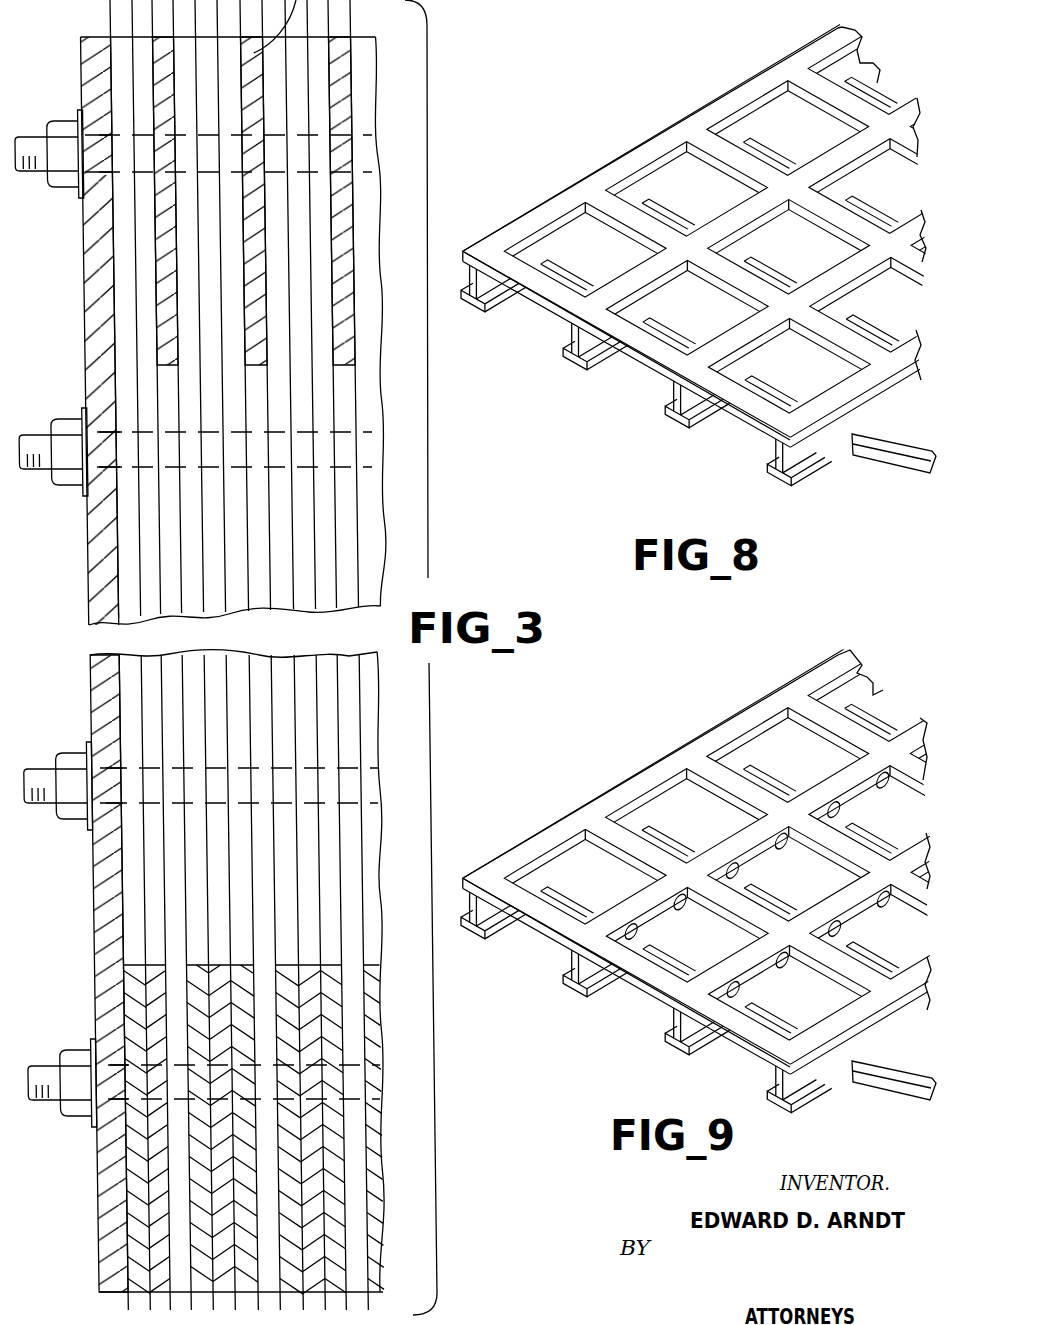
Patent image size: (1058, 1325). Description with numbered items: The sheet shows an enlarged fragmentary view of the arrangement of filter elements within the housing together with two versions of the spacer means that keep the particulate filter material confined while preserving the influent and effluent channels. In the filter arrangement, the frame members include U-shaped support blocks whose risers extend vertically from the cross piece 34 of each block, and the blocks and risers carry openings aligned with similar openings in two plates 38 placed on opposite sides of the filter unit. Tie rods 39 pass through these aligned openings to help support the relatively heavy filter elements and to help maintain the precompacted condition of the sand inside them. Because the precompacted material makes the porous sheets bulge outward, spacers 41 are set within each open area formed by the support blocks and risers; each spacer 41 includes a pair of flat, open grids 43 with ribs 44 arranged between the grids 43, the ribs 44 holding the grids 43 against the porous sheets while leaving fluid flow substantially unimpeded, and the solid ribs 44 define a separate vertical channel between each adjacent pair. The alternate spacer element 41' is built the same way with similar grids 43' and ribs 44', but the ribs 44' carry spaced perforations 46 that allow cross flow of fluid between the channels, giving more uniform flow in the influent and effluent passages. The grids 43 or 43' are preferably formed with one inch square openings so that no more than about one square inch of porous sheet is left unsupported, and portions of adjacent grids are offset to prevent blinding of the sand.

In FIG. 3, the cross piece 34 is at (344, 65).
In FIG. 3, the plate 38 is at (94, 937).
In FIG. 3, the tie rod 39 is at (33, 473).
In FIG. 8, the spacer 41 is at (699, 250).
In FIG. 8, the grid 43 is at (760, 223).
In FIG. 8, the rib 44 is at (646, 375).
In FIG. 9, the alternate spacer element 41' is at (699, 875).
In FIG. 9, the grid 43' is at (760, 869).
In FIG. 9, the rib 44' is at (641, 1002).
In FIG. 9, the perforation 46 is at (786, 842).